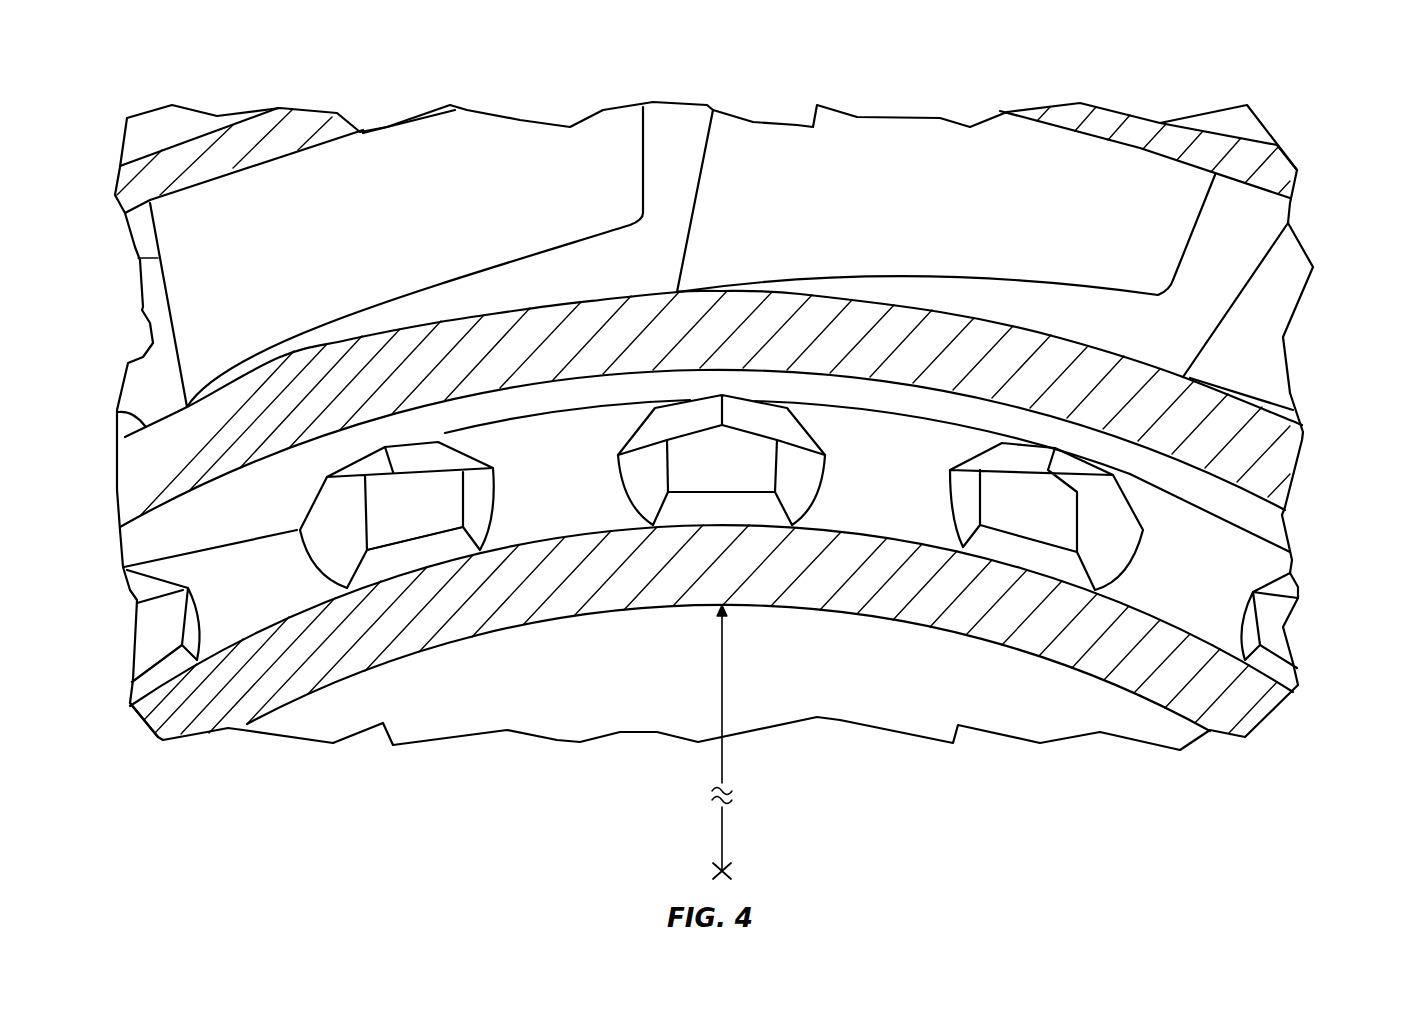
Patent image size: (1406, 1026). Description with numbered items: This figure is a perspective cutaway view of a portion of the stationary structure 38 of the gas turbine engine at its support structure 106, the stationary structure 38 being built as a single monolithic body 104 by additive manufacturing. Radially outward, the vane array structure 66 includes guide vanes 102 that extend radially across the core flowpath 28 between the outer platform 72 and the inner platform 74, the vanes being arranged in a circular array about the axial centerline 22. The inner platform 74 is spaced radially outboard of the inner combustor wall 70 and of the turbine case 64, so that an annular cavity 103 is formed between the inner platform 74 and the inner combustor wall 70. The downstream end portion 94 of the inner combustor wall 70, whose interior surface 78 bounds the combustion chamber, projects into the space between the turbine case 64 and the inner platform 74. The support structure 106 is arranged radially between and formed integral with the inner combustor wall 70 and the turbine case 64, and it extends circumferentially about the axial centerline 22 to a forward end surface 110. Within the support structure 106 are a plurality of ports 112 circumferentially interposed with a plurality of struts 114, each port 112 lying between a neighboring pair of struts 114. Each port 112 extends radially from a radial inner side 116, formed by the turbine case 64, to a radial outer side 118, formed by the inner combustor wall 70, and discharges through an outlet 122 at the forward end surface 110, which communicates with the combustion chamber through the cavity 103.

The stationary structure 38 is at (216, 93).
The monolithic body 104 is at (714, 402).
The guide vanes 102 is at (697, 170).
The outer platform 72 is at (1218, 145).
The vane array structure 66 is at (1302, 320).
The inner platform 74 is at (117, 410).
The inner combustor wall 70 is at (153, 527).
The downstream end portion 94 is at (702, 448).
The interior surface 78 is at (122, 560).
The cavity 103 is at (1258, 519).
The outlet 122 is at (435, 466).
The radial outer side 118 is at (687, 398).
The radial inner side 116 is at (725, 507).
The ports 112 is at (658, 468).
The forward end surface 110 is at (297, 592).
The struts 114 is at (243, 604).
The turbine case 64 is at (195, 737).
The support structure 106 is at (121, 658).
The core flowpath 28 is at (779, 695).
The axial centerline 22 is at (735, 870).